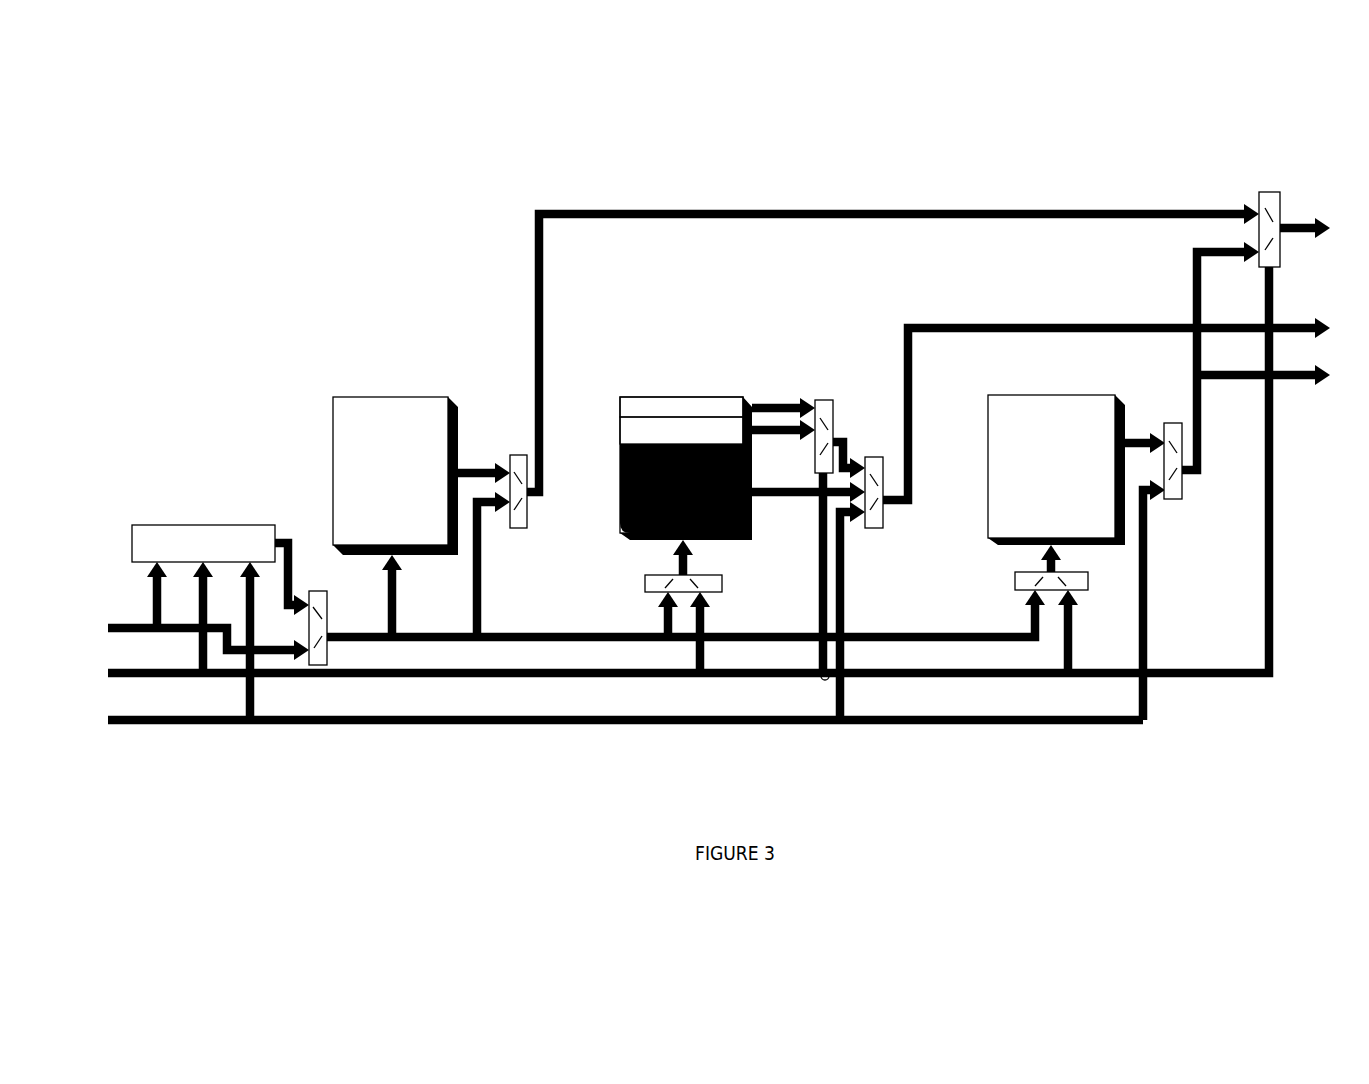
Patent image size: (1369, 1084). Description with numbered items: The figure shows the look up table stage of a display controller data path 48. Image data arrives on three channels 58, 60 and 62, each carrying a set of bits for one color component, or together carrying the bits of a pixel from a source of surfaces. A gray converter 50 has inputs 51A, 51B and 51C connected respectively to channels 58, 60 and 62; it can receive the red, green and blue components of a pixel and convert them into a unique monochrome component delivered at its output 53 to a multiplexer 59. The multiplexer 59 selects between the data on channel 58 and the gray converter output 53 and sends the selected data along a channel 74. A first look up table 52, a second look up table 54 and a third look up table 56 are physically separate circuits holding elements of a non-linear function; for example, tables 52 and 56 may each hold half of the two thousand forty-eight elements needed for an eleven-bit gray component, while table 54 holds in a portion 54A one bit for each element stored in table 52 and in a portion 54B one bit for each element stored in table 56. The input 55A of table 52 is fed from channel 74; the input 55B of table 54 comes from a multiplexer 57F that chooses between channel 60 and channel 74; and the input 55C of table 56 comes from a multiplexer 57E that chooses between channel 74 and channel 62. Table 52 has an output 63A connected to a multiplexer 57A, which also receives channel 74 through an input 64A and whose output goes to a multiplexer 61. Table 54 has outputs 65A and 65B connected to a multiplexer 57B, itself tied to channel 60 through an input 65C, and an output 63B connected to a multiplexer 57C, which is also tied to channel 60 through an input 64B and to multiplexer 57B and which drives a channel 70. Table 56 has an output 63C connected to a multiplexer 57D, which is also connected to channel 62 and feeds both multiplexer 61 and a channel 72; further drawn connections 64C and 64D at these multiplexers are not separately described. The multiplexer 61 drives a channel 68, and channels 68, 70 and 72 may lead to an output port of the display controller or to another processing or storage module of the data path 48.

The data path 48 is at (177, 196).
The gray converter 50 is at (203, 525).
The input 51A is at (150, 566).
The input 51B is at (203, 577).
The input 51C is at (248, 585).
The first look up table 52 is at (390, 397).
The output 53 is at (277, 538).
The second look up table 54 is at (688, 397).
The portion 54A is at (633, 405).
The portion 54B is at (632, 436).
The input 55A is at (396, 557).
The input 55B is at (679, 547).
The input 55C is at (1042, 541).
The third look up table 56 is at (1042, 395).
The multiplexer 57A is at (518, 454).
The multiplexer 57B is at (823, 399).
The multiplexer 57C is at (884, 526).
The multiplexer 57D is at (1183, 489).
The multiplexer 57E is at (1013, 578).
The multiplexer 57F is at (643, 592).
The channel 58 is at (108, 633).
The multiplexer 59 is at (318, 590).
The channel 60 is at (102, 680).
The multiplexer 61 is at (1270, 191).
The channel 62 is at (102, 727).
The output 63A is at (464, 469).
The output 63B is at (757, 497).
The output 63C is at (1133, 439).
The input 64A is at (500, 513).
The input 64B is at (861, 520).
The bypass path 64C is at (1153, 488).
The switch output path 64D is at (863, 462).
The output 65A is at (756, 409).
The output 65B is at (754, 434).
The input 65C is at (822, 478).
The channel 68 is at (1322, 228).
The channel 70 is at (1125, 409).
The channel 72 is at (1282, 377).
The channel 74 is at (528, 629).